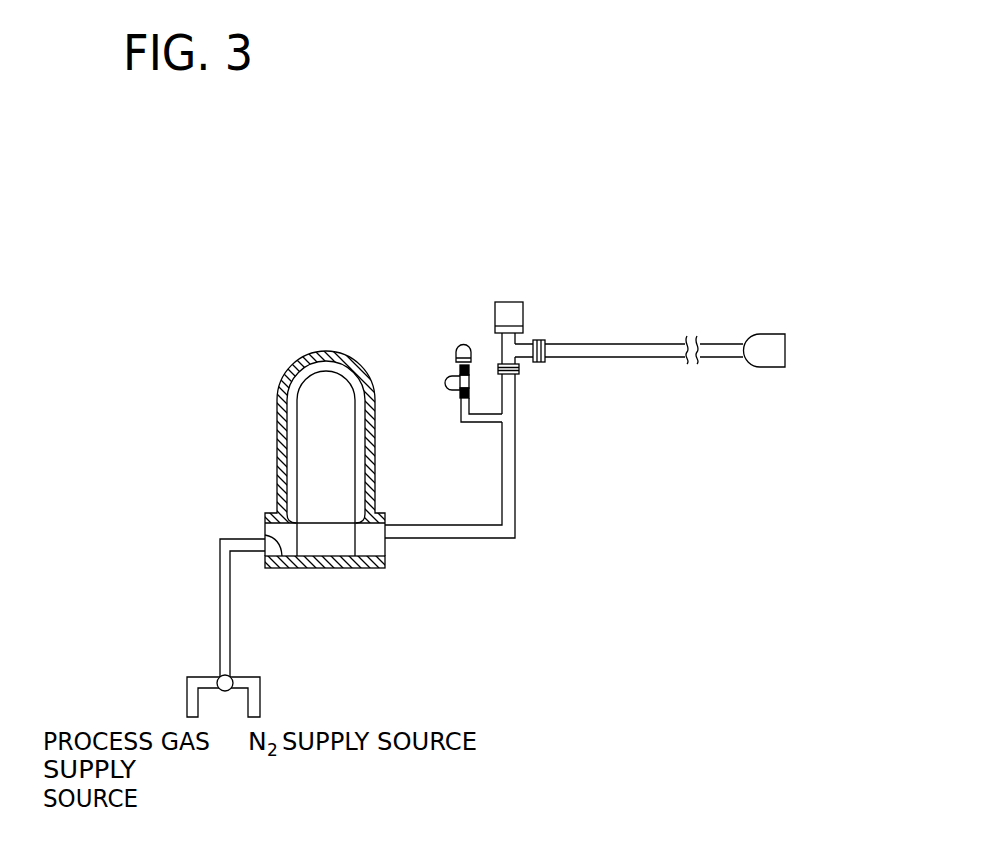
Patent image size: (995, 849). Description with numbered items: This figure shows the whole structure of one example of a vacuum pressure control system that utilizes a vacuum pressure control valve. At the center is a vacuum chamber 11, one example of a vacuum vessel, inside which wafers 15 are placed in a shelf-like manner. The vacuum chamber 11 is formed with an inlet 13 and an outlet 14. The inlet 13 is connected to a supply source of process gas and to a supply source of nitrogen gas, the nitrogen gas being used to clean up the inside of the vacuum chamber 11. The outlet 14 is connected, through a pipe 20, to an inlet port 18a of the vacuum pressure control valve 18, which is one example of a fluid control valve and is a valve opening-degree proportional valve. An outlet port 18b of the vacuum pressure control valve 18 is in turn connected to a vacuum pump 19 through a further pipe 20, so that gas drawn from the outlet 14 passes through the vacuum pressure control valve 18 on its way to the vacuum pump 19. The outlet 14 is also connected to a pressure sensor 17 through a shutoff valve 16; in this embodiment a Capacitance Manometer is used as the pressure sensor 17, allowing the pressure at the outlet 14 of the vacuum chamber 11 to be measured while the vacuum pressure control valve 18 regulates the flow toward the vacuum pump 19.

The vacuum chamber 11 is at (316, 352).
The inlet 13 is at (265, 533).
The outlet 14 is at (372, 556).
The wafers 15 is at (312, 420).
The shutoff valve 16 is at (445, 380).
The pressure sensor 17 is at (460, 345).
The vacuum pressure control valve 18 is at (518, 313).
The inlet port 18a is at (508, 374).
The outlet port 18b is at (537, 340).
The vacuum pump 19 is at (765, 334).
The pipe 20 is at (516, 460).